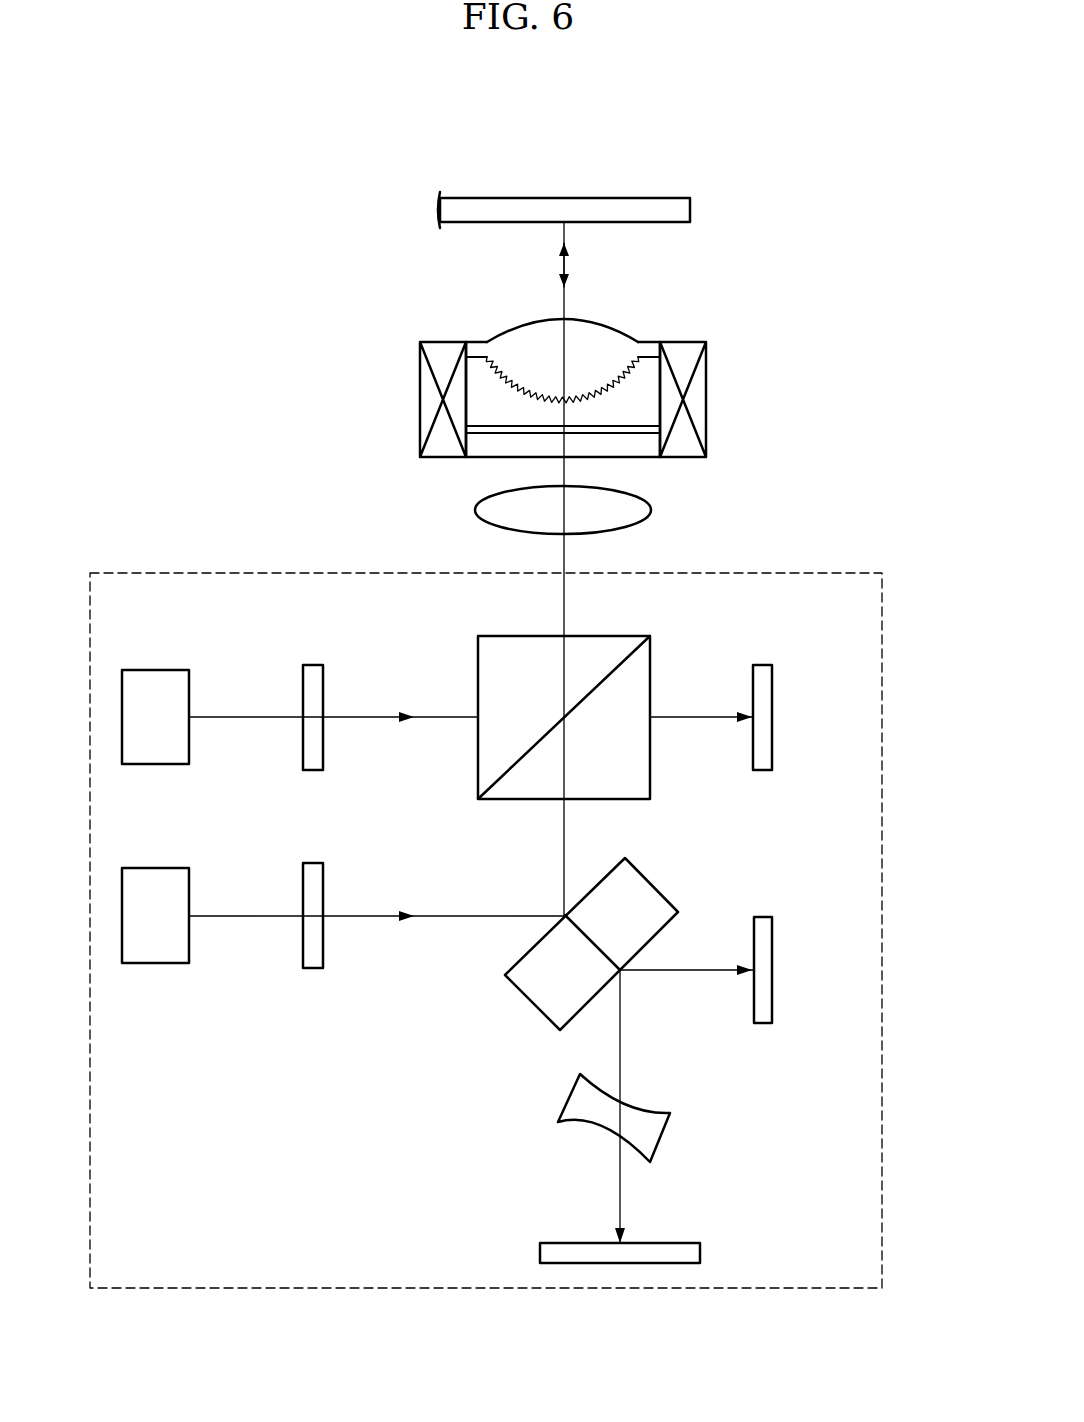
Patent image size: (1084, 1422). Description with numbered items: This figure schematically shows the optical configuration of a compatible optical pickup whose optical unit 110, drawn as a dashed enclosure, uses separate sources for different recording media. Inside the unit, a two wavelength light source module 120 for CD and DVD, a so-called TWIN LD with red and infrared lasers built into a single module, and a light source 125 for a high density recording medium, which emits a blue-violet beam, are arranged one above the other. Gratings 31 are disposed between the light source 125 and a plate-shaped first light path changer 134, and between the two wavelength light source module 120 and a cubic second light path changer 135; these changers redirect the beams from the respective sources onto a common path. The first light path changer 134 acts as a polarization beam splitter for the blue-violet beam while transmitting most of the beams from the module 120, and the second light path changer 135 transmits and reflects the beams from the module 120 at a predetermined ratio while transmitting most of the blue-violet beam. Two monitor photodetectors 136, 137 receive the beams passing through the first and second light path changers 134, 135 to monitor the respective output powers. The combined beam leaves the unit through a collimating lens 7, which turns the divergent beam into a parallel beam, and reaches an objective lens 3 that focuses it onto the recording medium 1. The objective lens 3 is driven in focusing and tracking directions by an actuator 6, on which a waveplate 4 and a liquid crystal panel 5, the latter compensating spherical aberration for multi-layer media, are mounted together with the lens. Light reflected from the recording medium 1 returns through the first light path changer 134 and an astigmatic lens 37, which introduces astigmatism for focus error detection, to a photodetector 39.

The recording medium 1 is at (655, 184).
The objective lens 3 is at (600, 336).
The waveplate 4 is at (655, 428).
The liquid crystal panel 5 is at (648, 452).
The actuator 6 is at (432, 398).
The collimating lens 7 is at (652, 510).
The gratings 31 is at (313, 664).
The astigmatic lens 37 is at (663, 1138).
The photodetector 39 is at (700, 1253).
The optical unit 110 is at (808, 572).
The two wavelength light source module 120 is at (157, 668).
The light source for high density recording medium 125 is at (157, 867).
The first light path changer 134 is at (655, 882).
The second light path changer 135 is at (650, 662).
The monitor photodetector 136 is at (772, 970).
The monitor photodetector 137 is at (772, 717).